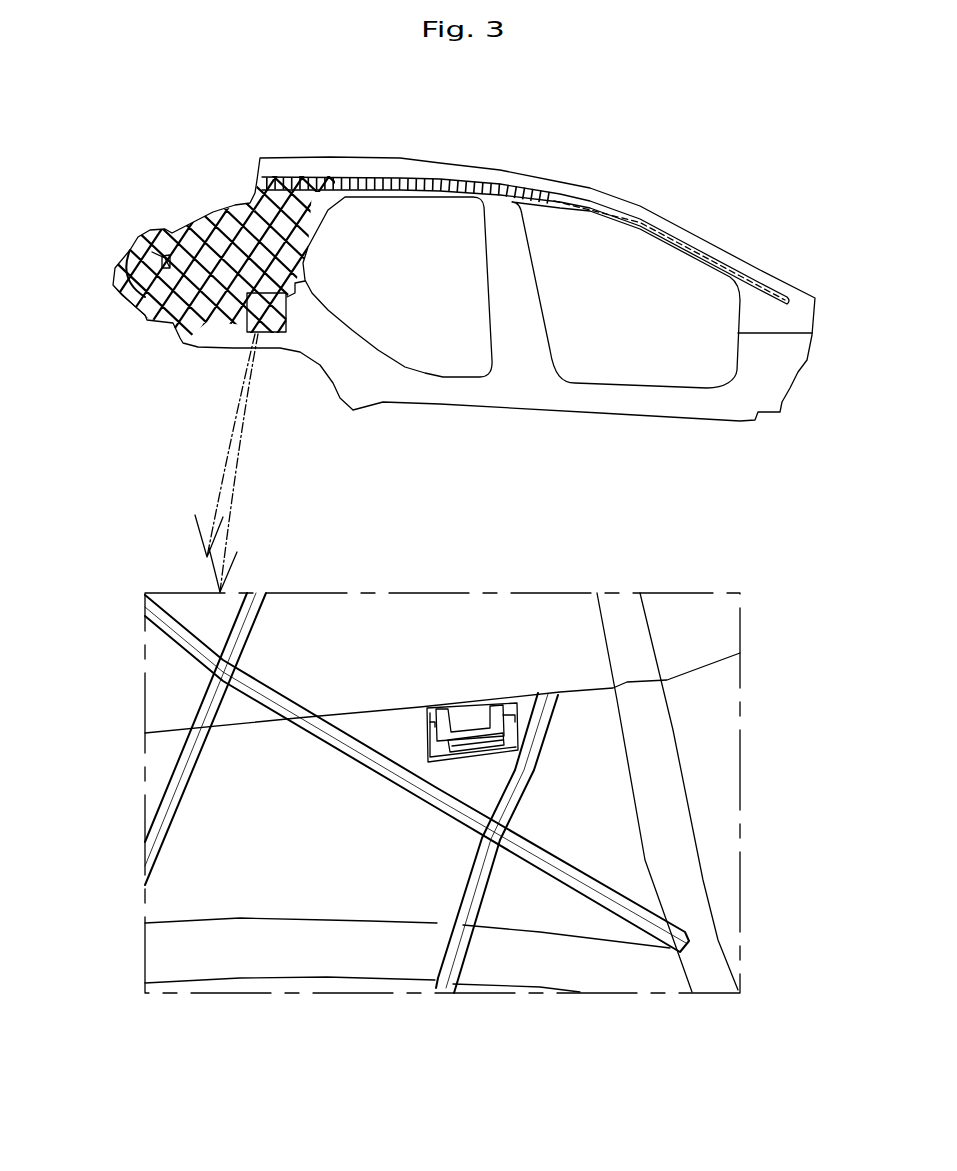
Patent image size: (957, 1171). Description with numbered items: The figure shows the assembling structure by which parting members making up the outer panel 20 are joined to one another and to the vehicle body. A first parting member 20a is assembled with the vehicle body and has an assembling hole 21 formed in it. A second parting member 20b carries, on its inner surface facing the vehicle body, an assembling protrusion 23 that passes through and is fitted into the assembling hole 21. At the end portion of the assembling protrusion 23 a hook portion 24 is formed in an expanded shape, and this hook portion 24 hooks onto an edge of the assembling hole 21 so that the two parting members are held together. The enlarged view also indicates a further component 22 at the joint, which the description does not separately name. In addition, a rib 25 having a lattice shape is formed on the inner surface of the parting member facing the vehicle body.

The vehicle body 20 is at (608, 184).
The first parting member 20a is at (628, 395).
The second parting member 20b is at (477, 175).
The assembling hole 21 is at (488, 716).
The clip upper portion 22 is at (468, 714).
The assembling protrusion 23 is at (458, 742).
The hook portion 24 is at (487, 740).
The rib 25 is at (163, 607).